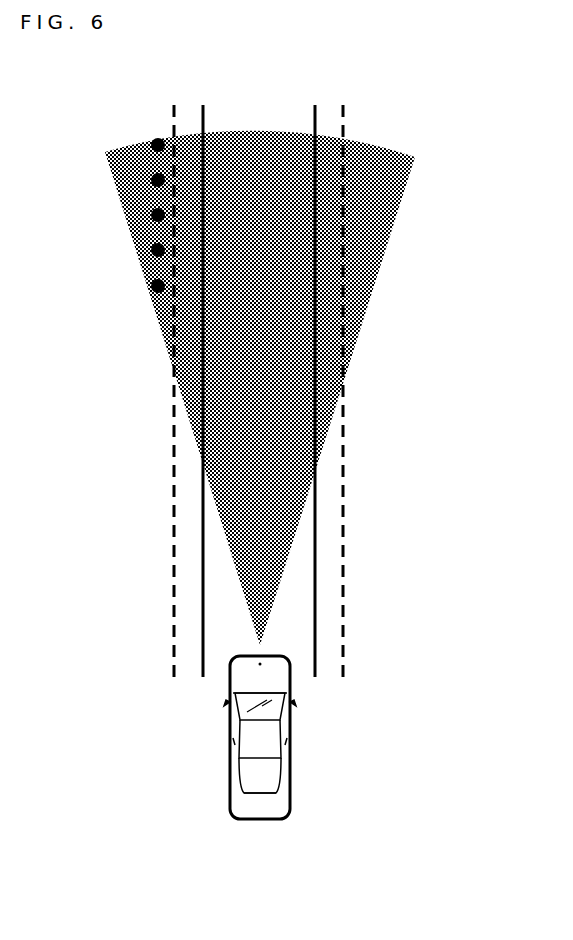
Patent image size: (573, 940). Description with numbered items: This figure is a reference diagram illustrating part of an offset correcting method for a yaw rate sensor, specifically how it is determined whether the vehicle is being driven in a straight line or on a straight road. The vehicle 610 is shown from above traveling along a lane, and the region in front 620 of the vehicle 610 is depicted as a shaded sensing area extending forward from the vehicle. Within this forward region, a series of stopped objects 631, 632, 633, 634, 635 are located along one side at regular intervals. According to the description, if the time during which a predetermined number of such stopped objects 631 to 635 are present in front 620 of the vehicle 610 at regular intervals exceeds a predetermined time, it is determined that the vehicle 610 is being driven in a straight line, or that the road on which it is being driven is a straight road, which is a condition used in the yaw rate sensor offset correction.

The vehicle 610 is at (297, 775).
The front of the vehicle 620 is at (385, 207).
The stopped object 631 is at (150, 286).
The stopped object 632 is at (150, 250).
The stopped object 633 is at (150, 215).
The stopped object 634 is at (150, 180).
The stopped object 635 is at (150, 145).